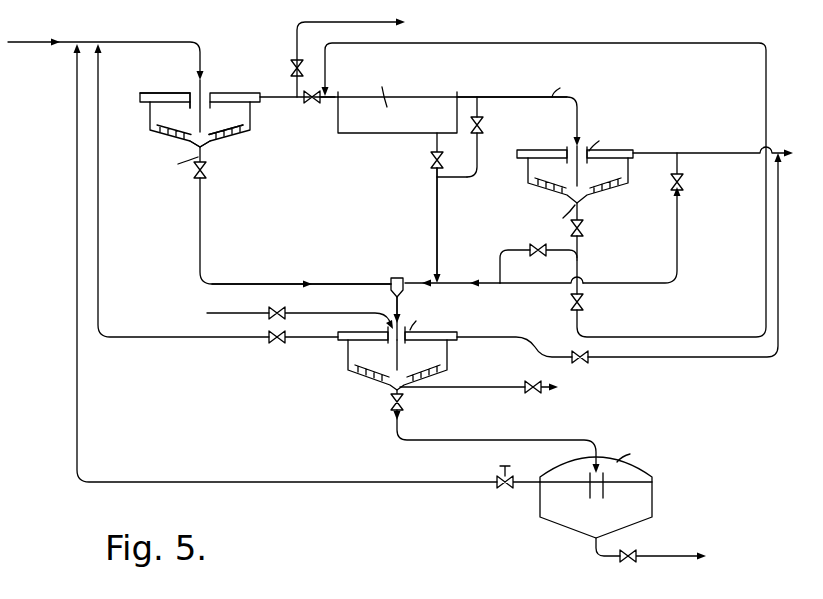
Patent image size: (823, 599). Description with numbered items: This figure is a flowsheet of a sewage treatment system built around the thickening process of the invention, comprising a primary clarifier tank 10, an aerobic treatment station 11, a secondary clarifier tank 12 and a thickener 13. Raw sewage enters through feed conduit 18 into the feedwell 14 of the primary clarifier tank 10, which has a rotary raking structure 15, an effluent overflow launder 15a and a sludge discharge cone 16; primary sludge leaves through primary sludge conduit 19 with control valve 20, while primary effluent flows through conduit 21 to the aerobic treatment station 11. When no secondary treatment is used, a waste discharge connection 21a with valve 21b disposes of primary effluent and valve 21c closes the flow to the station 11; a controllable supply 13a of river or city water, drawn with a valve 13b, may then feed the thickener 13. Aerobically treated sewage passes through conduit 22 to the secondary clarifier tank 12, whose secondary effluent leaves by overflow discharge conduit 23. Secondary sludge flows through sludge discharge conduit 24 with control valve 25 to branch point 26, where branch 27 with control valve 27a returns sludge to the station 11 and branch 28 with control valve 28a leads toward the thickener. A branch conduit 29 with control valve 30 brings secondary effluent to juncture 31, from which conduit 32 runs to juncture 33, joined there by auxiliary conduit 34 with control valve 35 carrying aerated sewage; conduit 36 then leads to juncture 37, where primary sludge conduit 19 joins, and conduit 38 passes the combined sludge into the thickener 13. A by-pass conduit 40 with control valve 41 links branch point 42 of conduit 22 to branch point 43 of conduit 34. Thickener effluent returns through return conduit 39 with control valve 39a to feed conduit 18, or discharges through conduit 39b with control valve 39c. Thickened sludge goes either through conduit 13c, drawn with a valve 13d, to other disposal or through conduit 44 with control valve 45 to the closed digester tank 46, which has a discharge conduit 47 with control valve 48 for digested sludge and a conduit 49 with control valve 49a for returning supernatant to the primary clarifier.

The primary clarifier tank 10 is at (157, 124).
The aerobic treatment station 11 is at (352, 138).
The secondary clarifier tank 12 is at (519, 176).
The thickener 13 is at (460, 358).
The controllable supply 13a is at (222, 313).
The valve in thickener feed line 13b is at (270, 313).
The conduit 13c is at (487, 387).
The valve in thickened sludge product line 13d is at (536, 391).
The feedwell 14 is at (192, 92).
The rotary raking structure 15 is at (217, 129).
The effluent overflow launder 15a is at (143, 94).
The sludge discharge cone 16 is at (206, 142).
The feed conduit 18 is at (124, 42).
The primary sludge conduit 19 is at (200, 195).
The control valve 20 is at (206, 170).
The conduit 21 is at (285, 96).
The waste discharge connection 21a is at (297, 33).
The valve 21b is at (302, 66).
The valve 21c is at (322, 101).
The conduit 22 is at (492, 97).
The overflow discharge conduit 23 is at (655, 154).
The sludge discharge conduit 24 is at (580, 242).
The control valve 25 is at (583, 228).
The branch point 26 is at (584, 253).
The branch 27 is at (664, 337).
The control valve 27a is at (584, 302).
The branch 28 is at (500, 271).
The control valve 28a is at (537, 258).
The branch conduit 29 is at (678, 231).
The control valve 30 is at (683, 182).
The juncture 31 is at (500, 285).
The conduit 32 is at (492, 285).
The juncture 33 is at (405, 285).
The auxiliary conduit 34 is at (437, 203).
The control valve 35 is at (433, 164).
The conduit 36 is at (405, 278).
The juncture 37 is at (390, 286).
The conduit 38 is at (396, 308).
The return conduit 39 is at (160, 337).
The control valve 39a is at (277, 342).
The conduit 39b is at (692, 358).
The control valve 39c is at (578, 363).
The by-pass conduit 40 is at (480, 147).
The control valve 41 is at (484, 126).
The branch point 42 is at (477, 98).
The branch point 43 is at (437, 178).
The conduit 44 is at (476, 441).
The control valve 45 is at (391, 402).
The digester tank 46 is at (654, 495).
The discharge conduit 47 is at (603, 560).
The control valve 48 is at (628, 563).
The conduit 49 is at (298, 481).
The control valve 49a is at (503, 490).